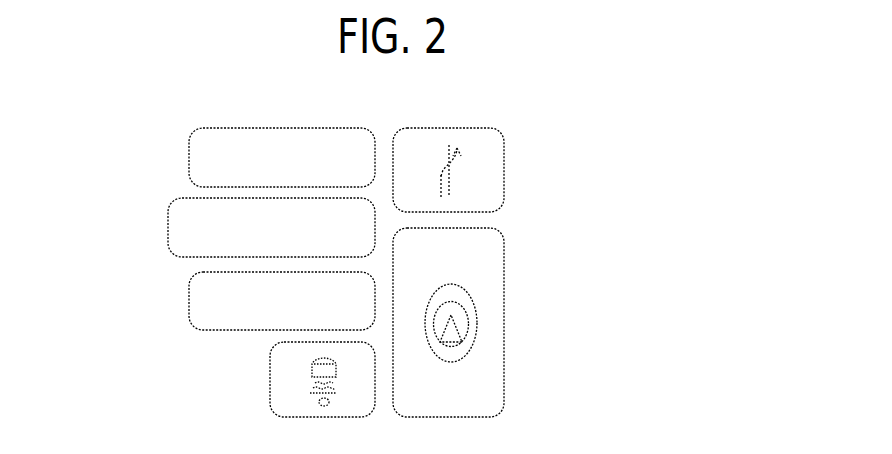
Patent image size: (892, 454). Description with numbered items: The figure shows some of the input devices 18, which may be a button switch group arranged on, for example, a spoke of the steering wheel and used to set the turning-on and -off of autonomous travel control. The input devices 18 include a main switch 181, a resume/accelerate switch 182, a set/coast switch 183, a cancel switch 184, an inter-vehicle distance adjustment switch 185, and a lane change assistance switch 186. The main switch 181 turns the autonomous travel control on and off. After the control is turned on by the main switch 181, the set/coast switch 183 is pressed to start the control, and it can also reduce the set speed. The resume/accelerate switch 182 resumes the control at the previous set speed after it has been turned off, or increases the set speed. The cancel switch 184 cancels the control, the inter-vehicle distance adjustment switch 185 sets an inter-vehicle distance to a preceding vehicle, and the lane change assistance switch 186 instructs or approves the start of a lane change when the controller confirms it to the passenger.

The input devices 18 is at (653, 160).
The main switch 181 is at (504, 243).
The resume/accelerate switch 182 is at (189, 141).
The set/coast switch 183 is at (189, 286).
The cancel switch 184 is at (168, 212).
The inter-vehicle distance adjustment switch 185 is at (270, 355).
The lane change assistance switch 186 is at (504, 143).